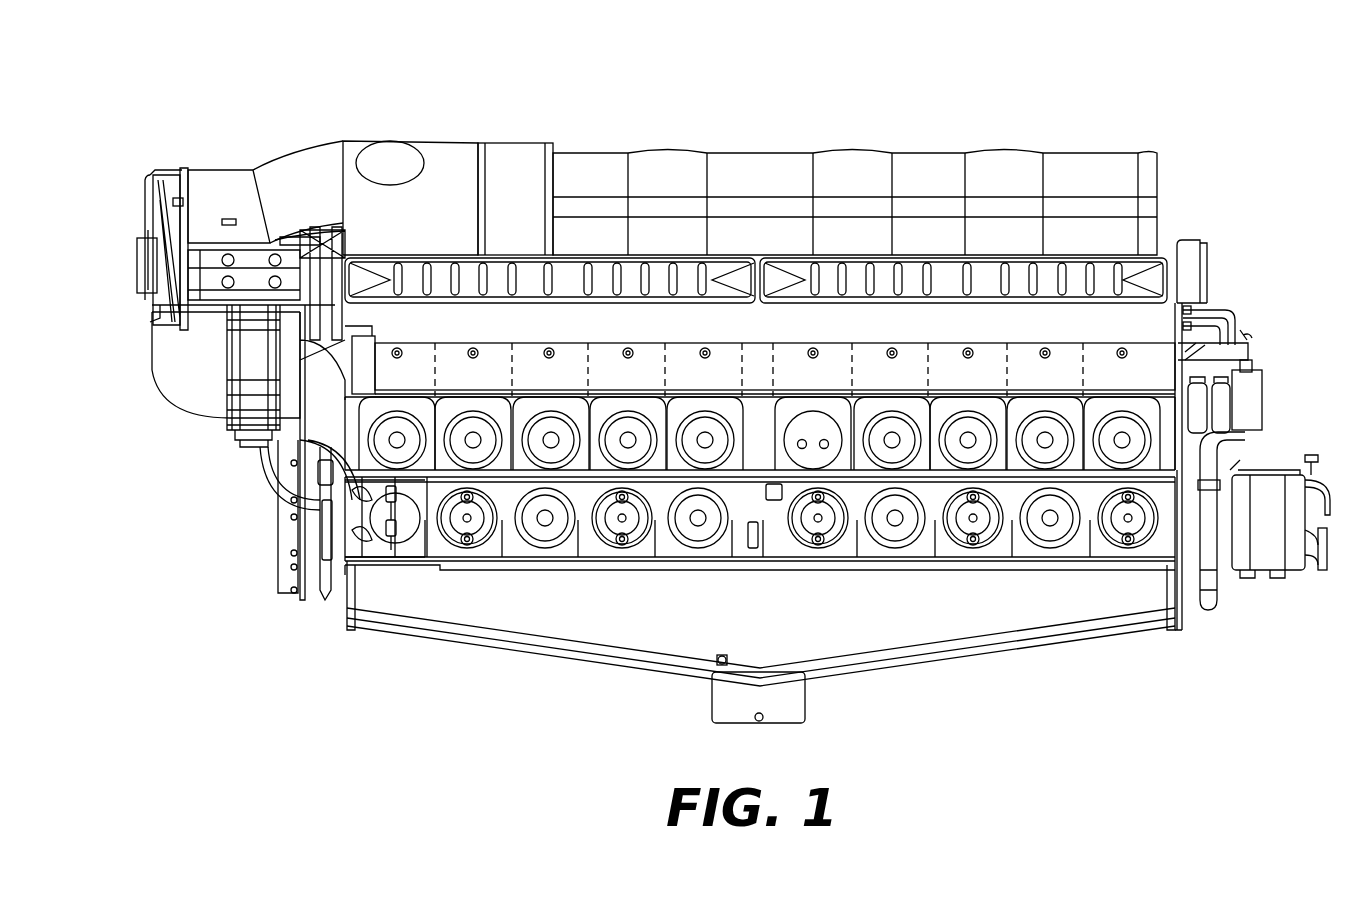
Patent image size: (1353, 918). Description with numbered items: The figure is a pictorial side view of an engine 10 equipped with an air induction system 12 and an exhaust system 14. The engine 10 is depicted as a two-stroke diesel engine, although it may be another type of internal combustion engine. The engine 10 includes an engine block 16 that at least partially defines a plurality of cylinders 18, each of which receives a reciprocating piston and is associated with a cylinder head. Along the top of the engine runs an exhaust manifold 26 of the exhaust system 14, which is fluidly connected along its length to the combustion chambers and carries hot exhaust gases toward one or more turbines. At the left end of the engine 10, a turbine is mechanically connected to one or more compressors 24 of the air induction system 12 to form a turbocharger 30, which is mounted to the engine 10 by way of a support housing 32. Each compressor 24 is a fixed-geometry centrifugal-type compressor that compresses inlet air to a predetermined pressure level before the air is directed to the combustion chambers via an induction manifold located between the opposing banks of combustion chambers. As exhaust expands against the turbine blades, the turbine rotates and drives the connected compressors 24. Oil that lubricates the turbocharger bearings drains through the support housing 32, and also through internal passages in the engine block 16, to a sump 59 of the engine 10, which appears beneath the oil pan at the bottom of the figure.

The engine 10 is at (1182, 122).
The air induction system 12 is at (121, 253).
The exhaust system 14 is at (1173, 182).
The engine block 16 is at (806, 382).
The cylinders 18 is at (1090, 365).
The compressor 24 is at (173, 166).
The exhaust manifold 26 is at (781, 178).
The turbocharger 30 is at (263, 102).
The support housing 32 is at (330, 247).
The sump 59 is at (806, 692).